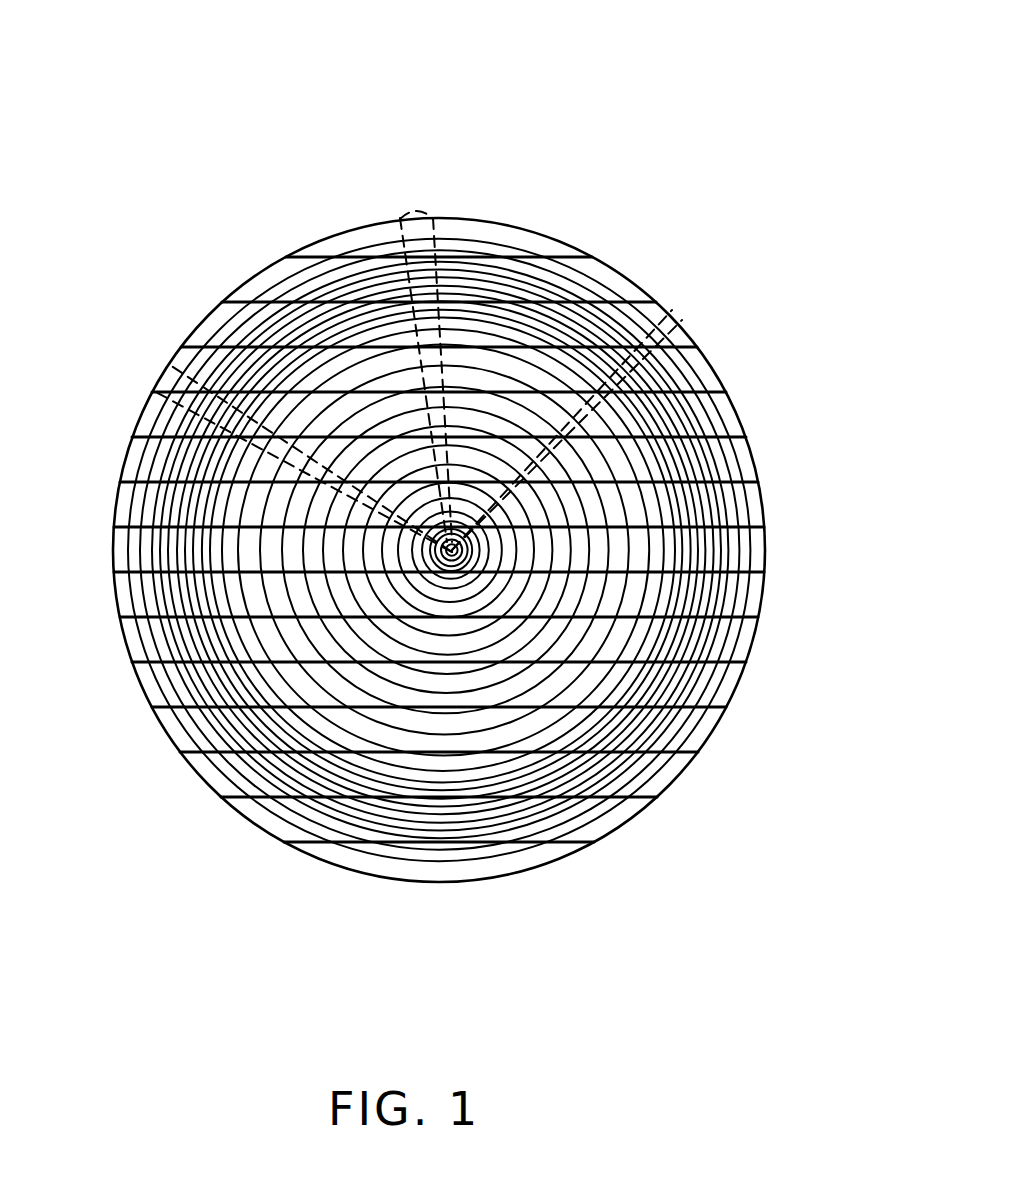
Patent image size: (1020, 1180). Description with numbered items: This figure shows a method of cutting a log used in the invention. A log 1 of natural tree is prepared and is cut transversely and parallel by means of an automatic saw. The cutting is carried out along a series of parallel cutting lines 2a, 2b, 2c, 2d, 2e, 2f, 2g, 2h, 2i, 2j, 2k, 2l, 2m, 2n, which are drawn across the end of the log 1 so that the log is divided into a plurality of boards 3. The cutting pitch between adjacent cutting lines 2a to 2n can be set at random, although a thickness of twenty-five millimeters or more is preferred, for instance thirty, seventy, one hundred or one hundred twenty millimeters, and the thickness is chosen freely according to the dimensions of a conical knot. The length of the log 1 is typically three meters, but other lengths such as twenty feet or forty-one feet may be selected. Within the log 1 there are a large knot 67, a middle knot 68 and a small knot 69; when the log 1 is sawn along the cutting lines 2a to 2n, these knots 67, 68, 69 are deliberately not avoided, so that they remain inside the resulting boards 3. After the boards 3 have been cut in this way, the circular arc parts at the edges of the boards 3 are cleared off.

The log 1 is at (103, 88).
The cutting line 2a is at (594, 254).
The cutting line 2b is at (658, 300).
The cutting line 2c is at (699, 345).
The cutting line 2d is at (728, 391).
The cutting line 2e is at (748, 436).
The cutting line 2f is at (761, 481).
The cutting line 2g is at (767, 527).
The cutting line 2h is at (767, 572).
The cutting line 2i is at (761, 618).
The cutting line 2j is at (749, 663).
The cutting line 2k is at (729, 708).
The cutting line 2l is at (700, 754).
The cutting line 2m is at (659, 799).
The cutting line 2n is at (596, 845).
The board 3 is at (262, 274).
The large knot 67 is at (303, 455).
The middle knot 68 is at (415, 213).
The small knot 69 is at (595, 392).